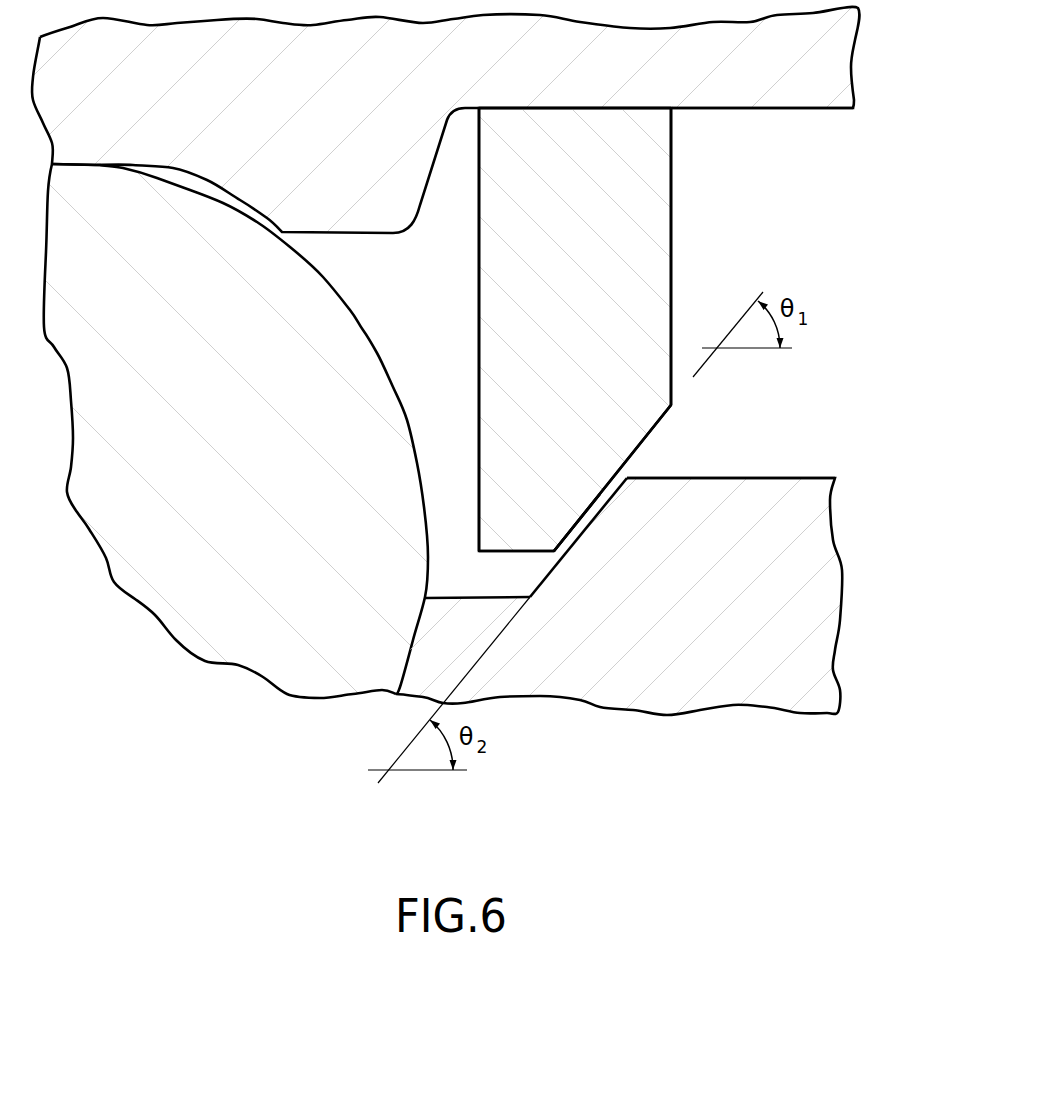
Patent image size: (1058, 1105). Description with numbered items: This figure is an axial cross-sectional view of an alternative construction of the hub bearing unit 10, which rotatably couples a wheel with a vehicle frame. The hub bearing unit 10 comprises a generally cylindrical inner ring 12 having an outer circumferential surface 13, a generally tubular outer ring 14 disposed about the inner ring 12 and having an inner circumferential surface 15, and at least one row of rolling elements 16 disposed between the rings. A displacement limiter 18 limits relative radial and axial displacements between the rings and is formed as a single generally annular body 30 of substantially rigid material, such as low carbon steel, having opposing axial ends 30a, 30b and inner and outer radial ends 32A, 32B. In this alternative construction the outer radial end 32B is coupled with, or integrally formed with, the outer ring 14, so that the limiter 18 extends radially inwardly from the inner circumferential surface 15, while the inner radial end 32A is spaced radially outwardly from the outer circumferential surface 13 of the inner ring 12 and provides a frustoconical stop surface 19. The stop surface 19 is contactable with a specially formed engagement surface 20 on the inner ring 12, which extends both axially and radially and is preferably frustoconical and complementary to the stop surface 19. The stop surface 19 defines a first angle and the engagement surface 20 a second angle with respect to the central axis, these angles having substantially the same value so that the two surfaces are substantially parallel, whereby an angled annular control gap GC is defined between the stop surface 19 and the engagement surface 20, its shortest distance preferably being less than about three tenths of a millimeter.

The hub bearing unit 10 is at (870, 280).
The inner ring 12 is at (860, 575).
The outer circumferential surface 13 is at (811, 470).
The outer ring 14 is at (875, 105).
The inner circumferential surface 15 is at (807, 112).
The rolling elements 16 is at (97, 397).
The displacement limiter 18 is at (710, 215).
The frustoconical stop surface 19 is at (648, 432).
The engagement surface 20 is at (573, 533).
The annular body 30 is at (670, 283).
The axial end 30a is at (672, 178).
The axial end 30b is at (478, 345).
The inner radial end 32A is at (510, 535).
The outer radial end 32B is at (585, 122).
The control gap GC is at (600, 503).